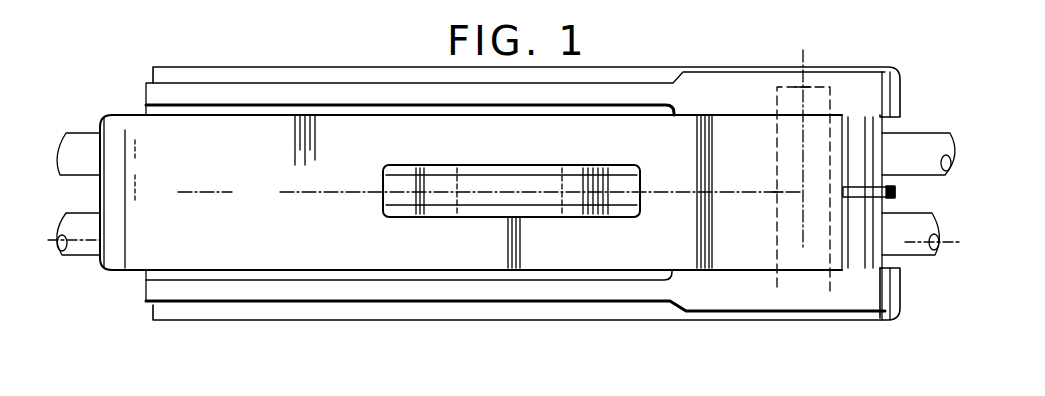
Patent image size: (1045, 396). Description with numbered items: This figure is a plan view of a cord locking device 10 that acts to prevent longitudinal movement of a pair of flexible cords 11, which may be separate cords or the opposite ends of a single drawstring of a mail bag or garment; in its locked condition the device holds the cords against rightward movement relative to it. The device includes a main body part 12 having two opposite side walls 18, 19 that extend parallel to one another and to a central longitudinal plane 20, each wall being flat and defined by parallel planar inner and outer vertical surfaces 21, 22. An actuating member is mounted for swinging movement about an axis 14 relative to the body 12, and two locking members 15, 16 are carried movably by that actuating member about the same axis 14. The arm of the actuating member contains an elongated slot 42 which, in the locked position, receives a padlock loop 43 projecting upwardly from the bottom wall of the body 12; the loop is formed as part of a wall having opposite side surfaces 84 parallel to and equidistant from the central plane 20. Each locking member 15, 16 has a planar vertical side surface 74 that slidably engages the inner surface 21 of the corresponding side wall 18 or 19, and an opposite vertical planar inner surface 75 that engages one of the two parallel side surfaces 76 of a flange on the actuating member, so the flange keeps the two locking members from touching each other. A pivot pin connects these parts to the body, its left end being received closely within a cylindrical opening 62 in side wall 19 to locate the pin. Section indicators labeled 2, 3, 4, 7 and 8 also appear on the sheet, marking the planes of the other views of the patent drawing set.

The cord locking device 10 is at (664, 50).
The flexible cords 11 is at (80, 143).
The main body part 12 is at (512, 303).
The axis 14 is at (805, 205).
The locking member 15 is at (860, 147).
The locking member 16 is at (259, 172).
The side wall 18 is at (598, 92).
The side wall 19 is at (438, 292).
The central longitudinal plane 20 is at (657, 190).
The inner vertical surface 21 is at (737, 115).
The outer vertical surface 22 is at (694, 312).
The slot 42 is at (447, 182).
The padlock loop 43 is at (522, 184).
The cylindrical opening 62 is at (790, 290).
The planar vertical side surface 74 is at (884, 314).
The vertical planar inner surface 75 is at (850, 192).
The side surfaces of flange 76 is at (856, 199).
The side surfaces of wall 84 is at (510, 175).
The section line 2 is at (48, 240).
The section line 3 is at (943, 95).
The section line 4 is at (888, 28).
The section line 7 is at (118, 28).
The section line 8 is at (302, 16).